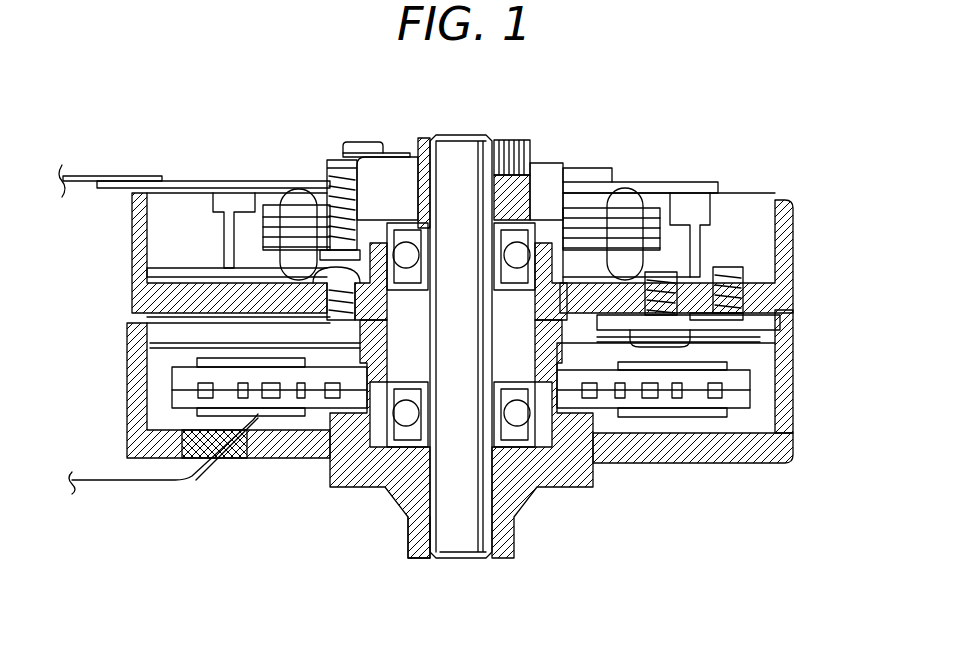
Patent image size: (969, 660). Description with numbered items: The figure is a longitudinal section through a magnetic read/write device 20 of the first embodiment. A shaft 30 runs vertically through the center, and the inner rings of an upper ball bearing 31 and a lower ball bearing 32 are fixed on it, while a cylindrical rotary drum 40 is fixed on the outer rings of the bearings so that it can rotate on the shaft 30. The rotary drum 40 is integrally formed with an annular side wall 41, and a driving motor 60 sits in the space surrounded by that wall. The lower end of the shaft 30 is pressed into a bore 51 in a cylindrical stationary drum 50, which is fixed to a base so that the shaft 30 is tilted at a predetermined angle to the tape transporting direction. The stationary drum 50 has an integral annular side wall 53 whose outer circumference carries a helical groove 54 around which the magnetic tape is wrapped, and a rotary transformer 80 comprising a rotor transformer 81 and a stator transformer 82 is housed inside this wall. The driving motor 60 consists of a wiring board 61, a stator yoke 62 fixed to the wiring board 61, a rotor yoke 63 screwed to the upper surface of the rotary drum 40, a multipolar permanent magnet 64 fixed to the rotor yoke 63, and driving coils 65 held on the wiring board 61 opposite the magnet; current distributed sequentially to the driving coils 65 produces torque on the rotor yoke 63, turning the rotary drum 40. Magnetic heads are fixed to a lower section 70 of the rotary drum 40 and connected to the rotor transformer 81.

The magnetic read/write device 20 is at (682, 468).
The shaft 30 is at (470, 134).
The ball bearing 31 is at (522, 252).
The ball bearing 32 is at (520, 418).
The rotary drum 40 is at (786, 280).
The annular side wall 41 is at (790, 212).
The stationary drum 50 is at (496, 468).
The bore 51 is at (430, 520).
The annular side wall 53 is at (788, 346).
The helical groove 54 is at (788, 412).
The driving motor 60 is at (173, 256).
The wiring board 61 is at (118, 184).
The stator yoke 62 is at (293, 256).
The rotor yoke 63 is at (270, 277).
The multipolar permanent magnet 64 is at (228, 208).
The driving coils 65 is at (260, 228).
The lower section 70 is at (735, 293).
The rotary transformer 80 is at (192, 426).
The rotor transformer 81 is at (185, 373).
The stator transformer 82 is at (185, 398).